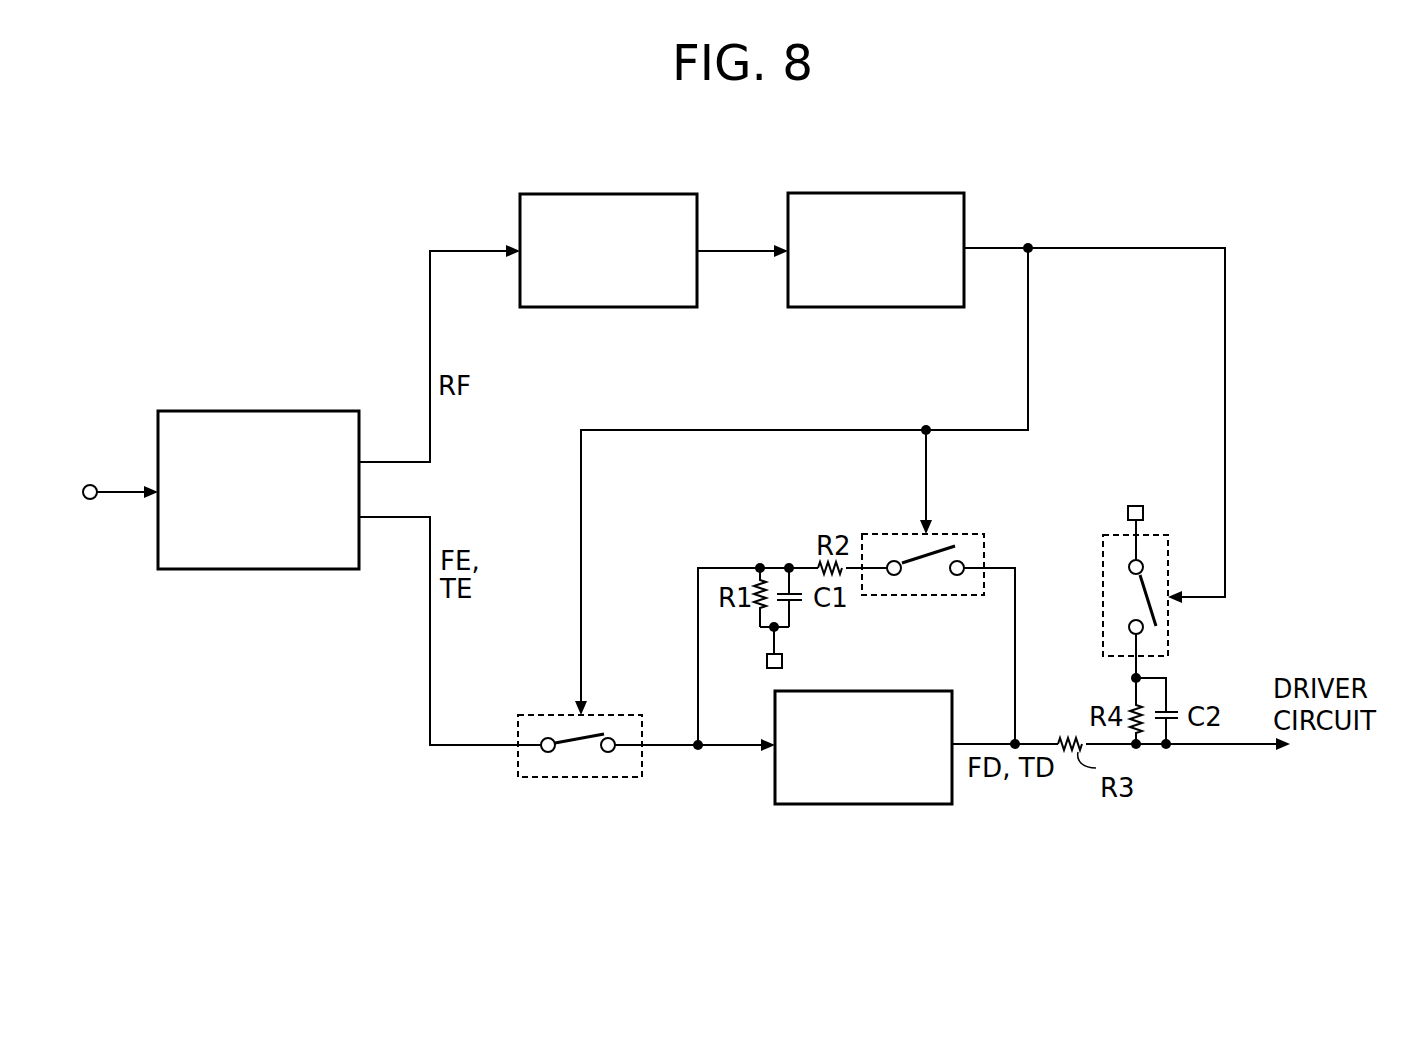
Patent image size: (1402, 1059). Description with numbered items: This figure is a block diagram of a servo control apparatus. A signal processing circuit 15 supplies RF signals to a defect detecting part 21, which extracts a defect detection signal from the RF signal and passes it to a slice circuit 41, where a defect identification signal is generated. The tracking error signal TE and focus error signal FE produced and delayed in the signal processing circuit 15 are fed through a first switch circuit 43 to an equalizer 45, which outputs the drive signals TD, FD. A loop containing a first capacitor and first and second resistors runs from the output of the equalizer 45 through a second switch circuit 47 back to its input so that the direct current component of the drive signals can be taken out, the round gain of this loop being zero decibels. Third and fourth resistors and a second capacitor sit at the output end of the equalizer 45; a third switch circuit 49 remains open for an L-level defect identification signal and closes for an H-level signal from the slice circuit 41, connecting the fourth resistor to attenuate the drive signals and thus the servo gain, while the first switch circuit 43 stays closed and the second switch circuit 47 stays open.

The signal processing circuit 15 is at (300, 411).
The defect detecting part 21 is at (605, 194).
The slice circuit 41 is at (925, 192).
The switch circuit (SW1) 43 is at (630, 715).
The equalizer 45 is at (928, 691).
The switch circuit (SW2) 47 is at (975, 533).
The switch circuit (SW3) 49 is at (1170, 646).